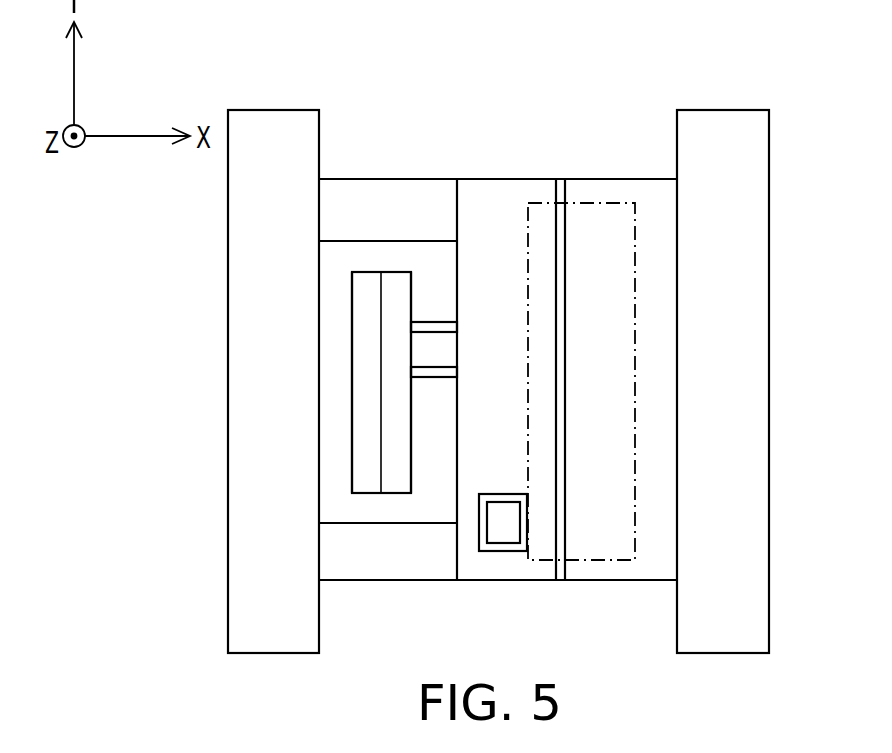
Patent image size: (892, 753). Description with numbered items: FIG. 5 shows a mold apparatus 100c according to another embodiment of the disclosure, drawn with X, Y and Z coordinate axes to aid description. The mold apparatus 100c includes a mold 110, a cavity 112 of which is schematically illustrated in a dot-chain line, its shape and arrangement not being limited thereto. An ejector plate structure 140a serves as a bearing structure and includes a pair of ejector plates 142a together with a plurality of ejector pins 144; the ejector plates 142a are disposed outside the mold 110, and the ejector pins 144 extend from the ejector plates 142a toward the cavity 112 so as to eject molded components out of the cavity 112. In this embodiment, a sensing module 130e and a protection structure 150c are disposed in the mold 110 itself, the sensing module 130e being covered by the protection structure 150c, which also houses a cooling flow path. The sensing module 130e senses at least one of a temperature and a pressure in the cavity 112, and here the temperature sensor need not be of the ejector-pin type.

The mold apparatus 100c is at (571, 85).
The mold 110 is at (597, 179).
The cavity 112 is at (540, 200).
The ejector plate structure 140a is at (394, 271).
The ejector plates 142a is at (363, 293).
The ejector pins 144 is at (433, 332).
The protection structure 150c is at (515, 553).
The sensing module 130e is at (498, 533).